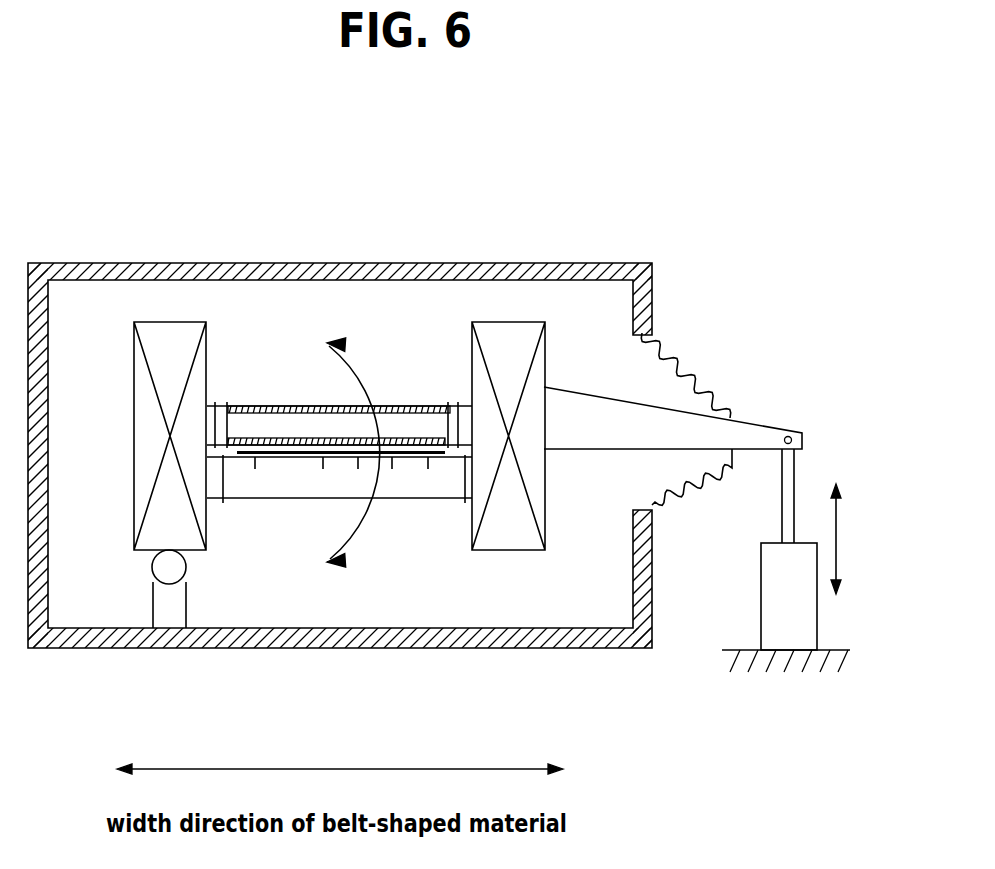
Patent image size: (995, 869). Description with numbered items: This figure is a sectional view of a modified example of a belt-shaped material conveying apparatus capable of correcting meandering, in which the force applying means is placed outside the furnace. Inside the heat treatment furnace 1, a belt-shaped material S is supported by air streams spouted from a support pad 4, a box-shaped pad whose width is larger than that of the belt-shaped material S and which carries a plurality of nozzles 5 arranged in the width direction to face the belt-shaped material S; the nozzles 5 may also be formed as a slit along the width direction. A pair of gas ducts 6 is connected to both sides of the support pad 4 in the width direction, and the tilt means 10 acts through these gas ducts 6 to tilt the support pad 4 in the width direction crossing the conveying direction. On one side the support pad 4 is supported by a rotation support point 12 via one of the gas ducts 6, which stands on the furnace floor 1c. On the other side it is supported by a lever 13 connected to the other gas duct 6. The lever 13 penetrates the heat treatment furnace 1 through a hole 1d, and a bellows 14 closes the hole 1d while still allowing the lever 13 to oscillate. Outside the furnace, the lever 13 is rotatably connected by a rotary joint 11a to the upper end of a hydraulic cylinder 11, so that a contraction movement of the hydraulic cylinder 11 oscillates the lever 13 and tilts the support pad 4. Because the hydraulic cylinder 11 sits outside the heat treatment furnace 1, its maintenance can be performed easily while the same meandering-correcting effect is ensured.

The heat treatment furnace 1 is at (645, 168).
The furnace floor 1c is at (357, 621).
The hole 1d is at (641, 337).
The support pad 4 is at (418, 406).
The nozzle 5 is at (254, 440).
The belt-shaped material S is at (300, 452).
The gas duct 6 is at (134, 371).
The tilt means 10 is at (775, 355).
The hydraulic cylinder 11 is at (758, 615).
The rotary joint 11a is at (792, 440).
The rotation support point 12 is at (183, 566).
The lever 13 is at (674, 423).
The bellows 14 is at (690, 502).